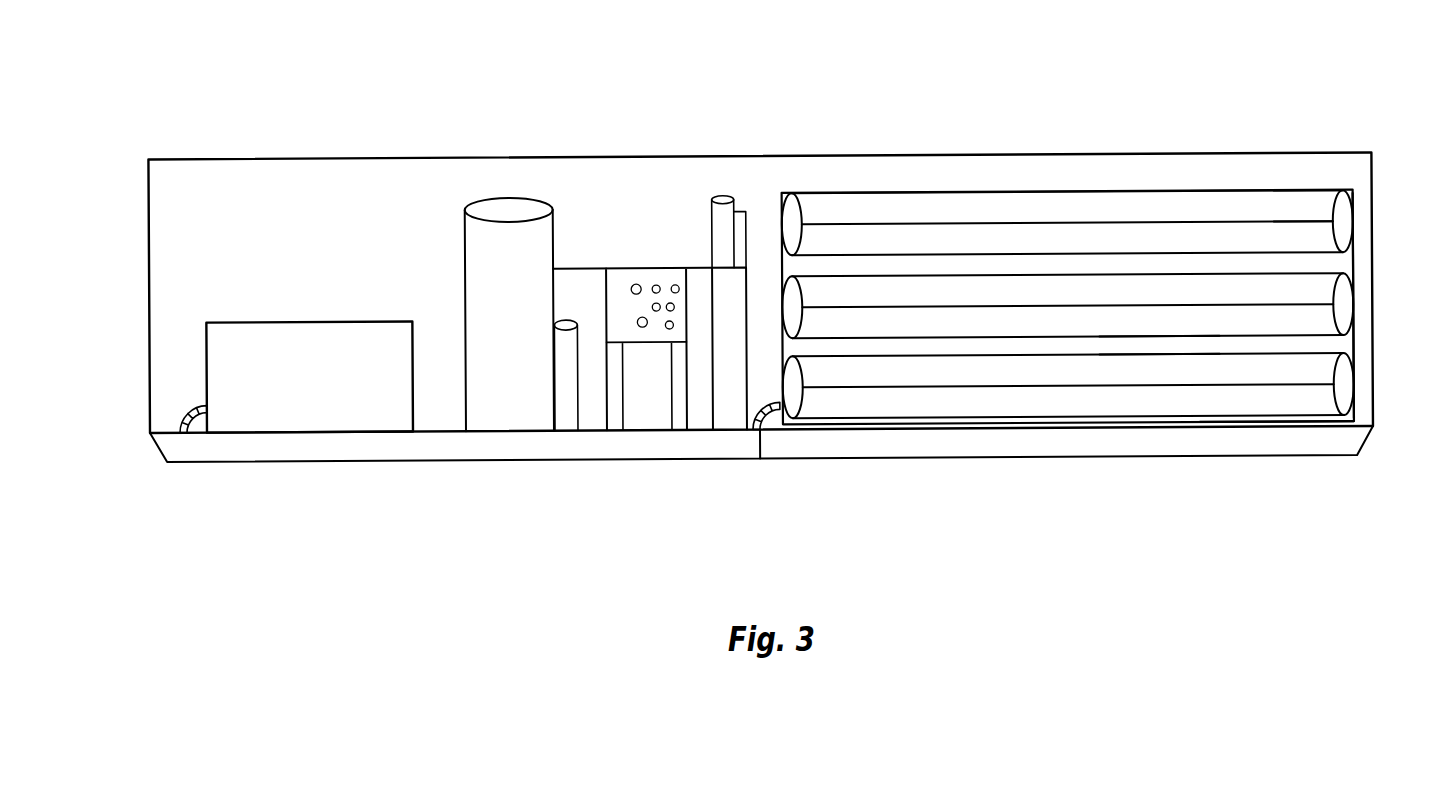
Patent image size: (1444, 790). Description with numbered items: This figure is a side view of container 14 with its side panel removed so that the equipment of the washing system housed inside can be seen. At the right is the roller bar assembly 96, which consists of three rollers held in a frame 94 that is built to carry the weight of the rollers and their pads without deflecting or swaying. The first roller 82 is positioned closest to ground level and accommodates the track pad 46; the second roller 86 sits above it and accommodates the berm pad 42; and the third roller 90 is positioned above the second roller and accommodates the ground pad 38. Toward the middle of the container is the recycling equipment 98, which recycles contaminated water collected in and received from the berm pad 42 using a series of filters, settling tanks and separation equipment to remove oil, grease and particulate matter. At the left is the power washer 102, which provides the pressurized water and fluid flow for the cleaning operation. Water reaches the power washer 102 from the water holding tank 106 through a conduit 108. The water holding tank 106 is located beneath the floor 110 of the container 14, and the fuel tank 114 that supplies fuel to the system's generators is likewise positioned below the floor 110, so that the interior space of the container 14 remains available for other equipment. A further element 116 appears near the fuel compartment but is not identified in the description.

The container 14 is at (800, 160).
The roller bar assembly 96 is at (1027, 173).
The ground pad 38 is at (1175, 256).
The third roller 90 is at (1275, 207).
The frame 94 is at (1355, 267).
The second roller 86 is at (1322, 299).
The first roller 82 is at (1320, 379).
The berm pad 42 is at (1160, 345).
The track pad 46 is at (1278, 425).
The recycling equipment 98 is at (575, 270).
The power washer 102 is at (320, 331).
The conduit 108 is at (192, 405).
The floor 110 is at (152, 433).
The water holding tank 106 is at (290, 453).
The fuel hose 116 is at (757, 433).
The fuel tank 114 is at (920, 448).